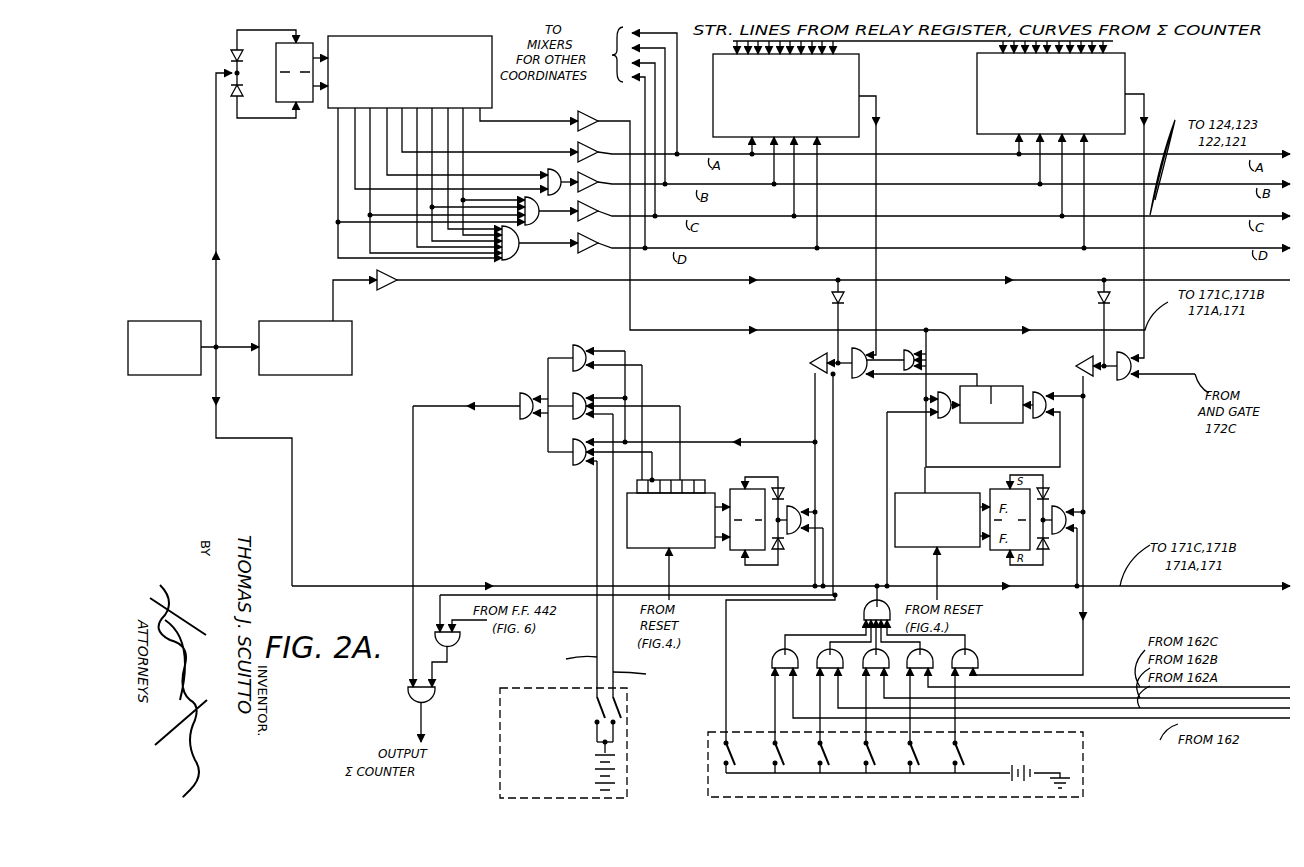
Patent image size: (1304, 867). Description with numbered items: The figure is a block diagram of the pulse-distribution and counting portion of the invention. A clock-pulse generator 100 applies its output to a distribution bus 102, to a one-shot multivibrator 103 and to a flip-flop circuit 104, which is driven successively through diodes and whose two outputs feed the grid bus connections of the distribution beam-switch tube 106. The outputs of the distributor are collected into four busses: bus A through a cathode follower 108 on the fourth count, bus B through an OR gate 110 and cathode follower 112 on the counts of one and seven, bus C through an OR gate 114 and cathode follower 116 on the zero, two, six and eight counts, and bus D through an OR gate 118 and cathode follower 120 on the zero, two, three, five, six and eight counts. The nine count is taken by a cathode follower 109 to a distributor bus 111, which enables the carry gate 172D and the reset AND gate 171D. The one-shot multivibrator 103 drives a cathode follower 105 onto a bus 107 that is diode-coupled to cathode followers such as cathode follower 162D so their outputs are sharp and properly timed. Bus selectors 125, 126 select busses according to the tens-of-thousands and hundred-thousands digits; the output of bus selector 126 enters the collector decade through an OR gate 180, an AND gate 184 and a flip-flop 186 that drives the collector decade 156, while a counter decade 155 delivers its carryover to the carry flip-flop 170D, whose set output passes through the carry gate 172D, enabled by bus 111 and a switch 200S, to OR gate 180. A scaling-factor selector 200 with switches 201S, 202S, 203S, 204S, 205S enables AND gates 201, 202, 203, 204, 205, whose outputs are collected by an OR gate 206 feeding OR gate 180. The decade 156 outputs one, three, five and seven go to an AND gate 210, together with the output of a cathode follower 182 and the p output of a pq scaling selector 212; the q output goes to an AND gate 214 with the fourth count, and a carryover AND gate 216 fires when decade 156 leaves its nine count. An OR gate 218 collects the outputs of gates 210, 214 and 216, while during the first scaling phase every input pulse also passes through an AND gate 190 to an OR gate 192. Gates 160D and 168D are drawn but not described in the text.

The clock-pulse generator 100 is at (163, 321).
The distribution bus 102 is at (278, 438).
The one-shot multivibrator 103 is at (276, 321).
The flip-flop circuit 104 is at (301, 104).
The cathode follower 105 is at (387, 290).
The distribution beam-switch tube 106 is at (492, 100).
The bus 107 is at (483, 284).
The cathode follower 108 is at (575, 148).
The cathode follower 109 is at (594, 114).
The OR gate 110 is at (548, 172).
The distributor bus 111 is at (681, 330).
The cathode follower 112 is at (592, 178).
The OR gate 114 is at (540, 221).
The cathode follower 116 is at (593, 209).
The OR gate 118 is at (517, 256).
The cathode follower 120 is at (584, 252).
The bus selector 125 is at (1125, 69).
The bus selector 126 is at (859, 71).
The beam-switching tube 155 is at (913, 549).
The collector decade 156 is at (642, 549).
The AND gate 160D is at (1126, 381).
The cathode follower 162D is at (1083, 356).
The AND gate 168D is at (1040, 392).
The carry flip-flop 170D is at (1005, 424).
The AND gate 171D is at (940, 419).
The carry gate 172D is at (906, 357).
The OR gate 180 is at (859, 379).
The cathode follower 182 is at (813, 361).
The AND gate 184 is at (798, 506).
The flip-flop 186 is at (732, 552).
The AND gate 190 is at (456, 645).
The OR gate 192 is at (410, 700).
The scaling-factor selector 200 is at (1083, 769).
The switch 200S is at (733, 744).
The AND gate 201 is at (774, 655).
The switch 201S is at (781, 760).
The AND gate 202 is at (822, 655).
The switch 202S is at (826, 760).
The AND gate 203 is at (866, 656).
The switch 203S is at (872, 760).
The AND gate 204 is at (915, 656).
The switch 204S is at (916, 760).
The AND gate 205 is at (978, 656).
The switch 205S is at (964, 752).
The OR gate 206 is at (864, 616).
The AND gate 210 is at (576, 465).
The pq scaling selector 212 is at (627, 760).
The AND gate 214 is at (578, 419).
The carryover AND gate 216 is at (579, 345).
The OR gate 218 is at (521, 393).